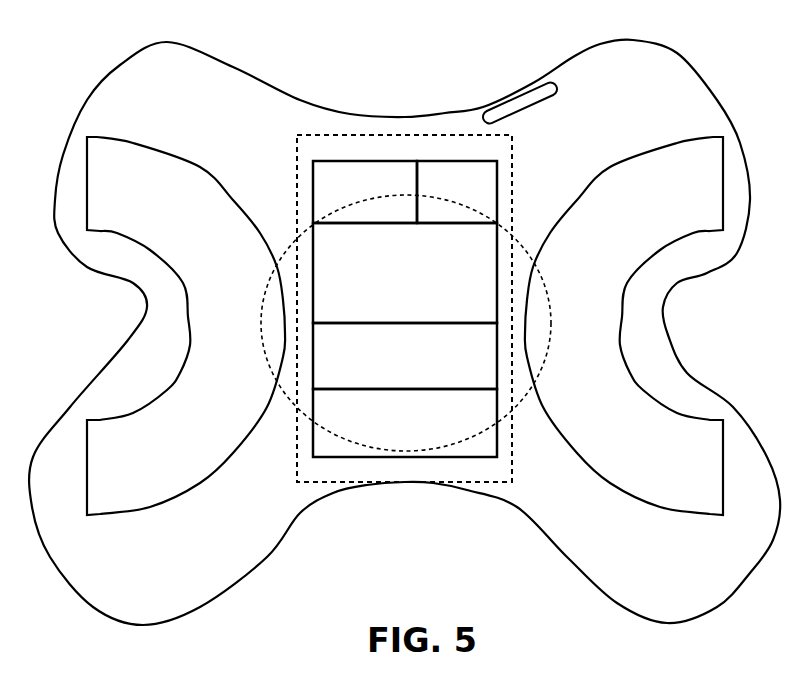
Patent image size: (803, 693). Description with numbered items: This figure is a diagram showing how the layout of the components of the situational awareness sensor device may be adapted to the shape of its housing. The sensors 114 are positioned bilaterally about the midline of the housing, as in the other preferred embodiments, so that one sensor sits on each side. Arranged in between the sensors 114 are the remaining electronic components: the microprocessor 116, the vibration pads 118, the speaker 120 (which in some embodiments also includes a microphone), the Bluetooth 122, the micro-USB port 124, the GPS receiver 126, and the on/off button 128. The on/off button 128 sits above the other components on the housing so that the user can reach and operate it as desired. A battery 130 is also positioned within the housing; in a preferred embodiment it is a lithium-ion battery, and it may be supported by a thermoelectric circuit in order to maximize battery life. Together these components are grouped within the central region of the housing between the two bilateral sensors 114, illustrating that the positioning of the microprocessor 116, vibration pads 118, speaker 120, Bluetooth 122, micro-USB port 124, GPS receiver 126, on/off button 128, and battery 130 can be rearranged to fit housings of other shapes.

The sensors 114 is at (87, 183).
The microprocessor 116 is at (405, 273).
The vibration pads 118 is at (498, 362).
The speaker 120 is at (358, 457).
The Bluetooth 122 is at (372, 160).
The micro-USB port 124 is at (532, 91).
The GPS receiver 126 is at (460, 160).
The on/off button 128 is at (452, 462).
The battery 130 is at (327, 482).